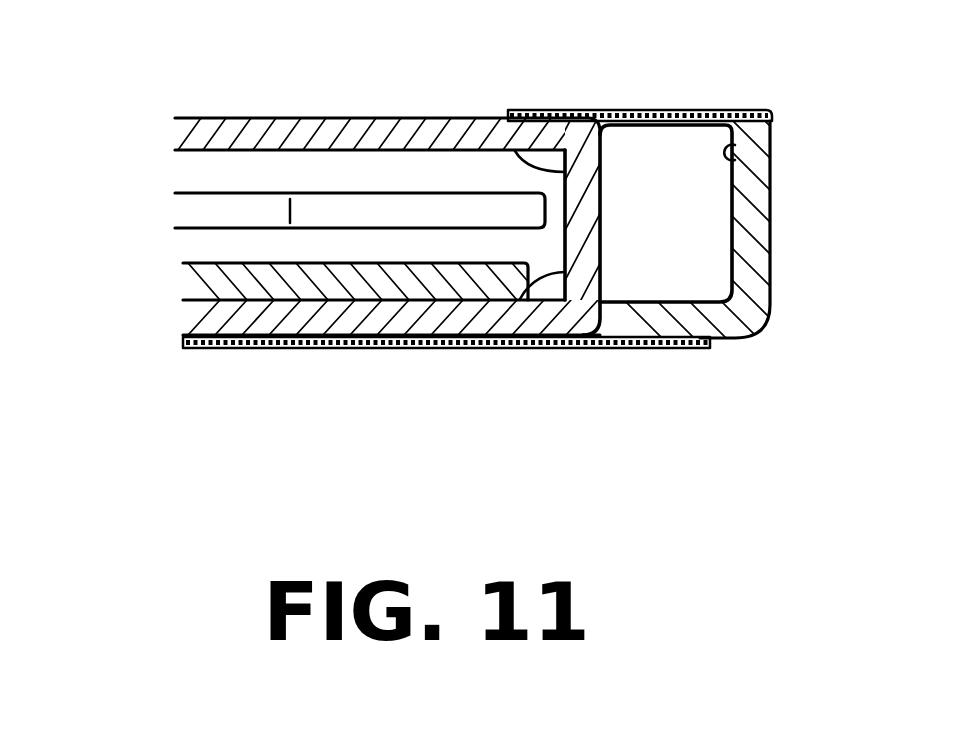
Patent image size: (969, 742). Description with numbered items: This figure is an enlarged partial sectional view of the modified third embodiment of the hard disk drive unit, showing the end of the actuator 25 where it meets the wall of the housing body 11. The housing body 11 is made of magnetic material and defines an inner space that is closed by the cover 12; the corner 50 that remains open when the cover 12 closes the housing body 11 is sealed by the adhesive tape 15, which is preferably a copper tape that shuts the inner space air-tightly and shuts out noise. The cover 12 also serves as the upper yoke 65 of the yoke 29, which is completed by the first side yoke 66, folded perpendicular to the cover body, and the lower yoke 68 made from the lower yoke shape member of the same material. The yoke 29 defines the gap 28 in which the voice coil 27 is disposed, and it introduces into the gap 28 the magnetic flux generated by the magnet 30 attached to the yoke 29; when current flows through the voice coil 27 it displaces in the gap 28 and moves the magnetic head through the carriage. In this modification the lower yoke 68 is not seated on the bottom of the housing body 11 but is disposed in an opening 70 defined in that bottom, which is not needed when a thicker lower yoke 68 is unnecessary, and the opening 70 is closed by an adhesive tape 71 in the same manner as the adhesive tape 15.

The housing body 11 is at (770, 273).
The cover 12 is at (203, 118).
The adhesive tape 15 is at (697, 109).
The actuator 25 is at (128, 150).
The voice coil 27 is at (193, 211).
The gap 28 is at (382, 184).
The yoke 29 is at (666, 142).
The magnet 30 is at (217, 281).
The corner 50 is at (733, 158).
The upper yoke 65 is at (604, 160).
The first side yoke 66 is at (577, 210).
The lower yoke 68 is at (563, 283).
The opening 70 is at (597, 348).
The adhesive tape 71 is at (372, 350).